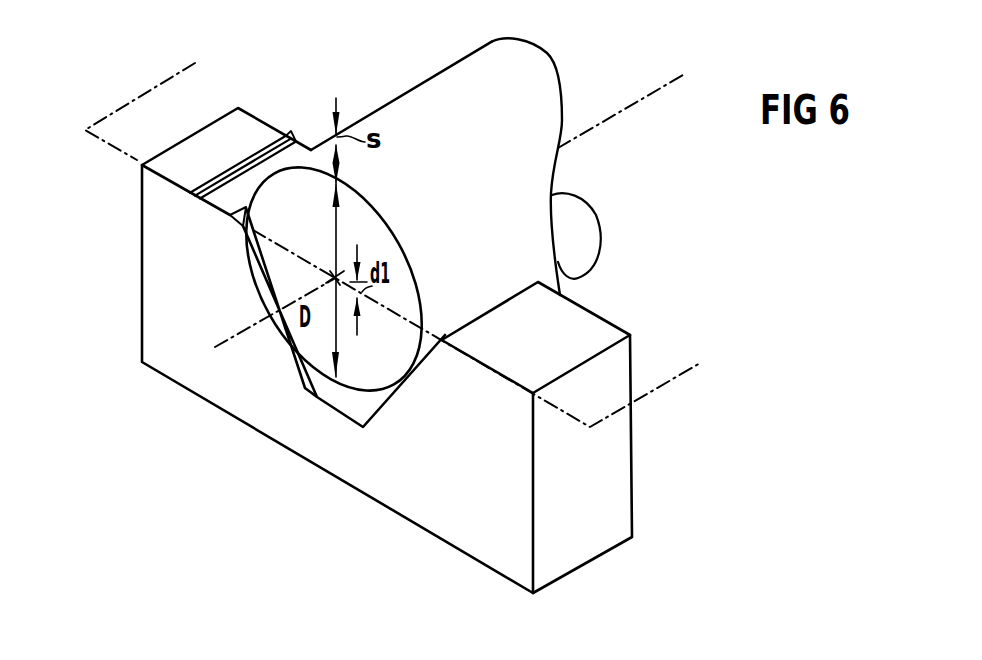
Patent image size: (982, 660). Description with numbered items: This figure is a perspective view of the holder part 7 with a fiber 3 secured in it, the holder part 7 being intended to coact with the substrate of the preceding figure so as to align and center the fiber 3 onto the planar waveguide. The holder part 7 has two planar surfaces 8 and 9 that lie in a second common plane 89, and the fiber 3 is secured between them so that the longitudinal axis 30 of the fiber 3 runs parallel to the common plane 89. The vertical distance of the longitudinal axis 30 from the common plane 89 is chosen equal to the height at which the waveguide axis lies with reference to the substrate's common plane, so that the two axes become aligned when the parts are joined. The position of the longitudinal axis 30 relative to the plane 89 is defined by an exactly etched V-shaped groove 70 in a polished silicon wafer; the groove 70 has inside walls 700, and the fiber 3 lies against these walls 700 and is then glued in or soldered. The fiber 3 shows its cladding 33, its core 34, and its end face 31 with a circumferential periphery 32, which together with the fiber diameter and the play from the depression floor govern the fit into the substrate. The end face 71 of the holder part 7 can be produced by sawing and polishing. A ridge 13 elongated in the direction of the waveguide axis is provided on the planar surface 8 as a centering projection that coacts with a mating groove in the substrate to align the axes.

The fiber 3 is at (405, 92).
The holder part 7 is at (612, 488).
The planar surface 8 is at (218, 140).
The planar surface 9 is at (602, 332).
The ridge 13 is at (276, 130).
The longitudinal axis of the fiber 30 is at (265, 312).
The end face of the fiber 31 is at (306, 182).
The circumferential surface of the end face 32 is at (397, 239).
The cladding 33 is at (560, 290).
The core 34 is at (334, 277).
The V-shaped groove 70 is at (308, 358).
The end face of the holder part 71 is at (475, 522).
The second common plane 89 is at (158, 88).
The inside walls 700 is at (317, 397).